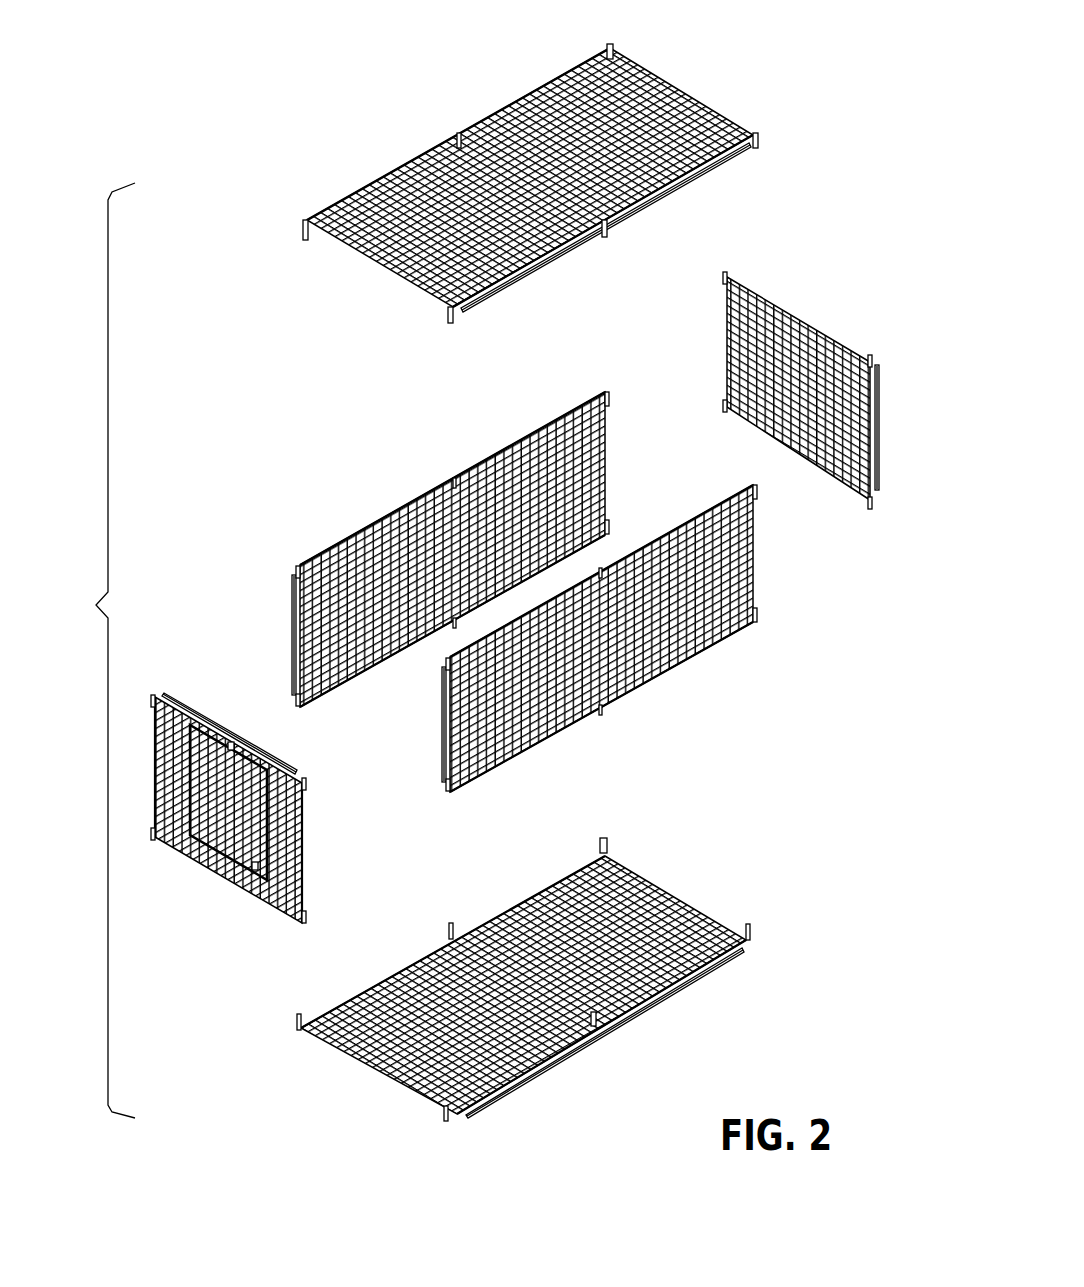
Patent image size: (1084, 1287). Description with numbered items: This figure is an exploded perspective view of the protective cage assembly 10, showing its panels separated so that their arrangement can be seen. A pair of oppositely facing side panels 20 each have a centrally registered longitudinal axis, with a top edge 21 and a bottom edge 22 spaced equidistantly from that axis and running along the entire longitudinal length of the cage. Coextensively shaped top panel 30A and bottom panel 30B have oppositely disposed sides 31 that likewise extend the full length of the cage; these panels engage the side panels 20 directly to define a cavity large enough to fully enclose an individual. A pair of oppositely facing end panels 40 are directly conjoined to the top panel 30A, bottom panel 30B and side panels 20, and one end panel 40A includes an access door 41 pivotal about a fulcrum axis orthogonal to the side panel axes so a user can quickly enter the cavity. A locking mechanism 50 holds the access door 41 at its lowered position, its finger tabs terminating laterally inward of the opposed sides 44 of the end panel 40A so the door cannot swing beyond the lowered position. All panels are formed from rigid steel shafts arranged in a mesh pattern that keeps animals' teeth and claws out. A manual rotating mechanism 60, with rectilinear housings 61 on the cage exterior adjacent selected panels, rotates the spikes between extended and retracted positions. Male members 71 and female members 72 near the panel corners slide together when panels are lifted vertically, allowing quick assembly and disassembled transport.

The assembly 10 is at (262, 122).
The side panels 20 is at (485, 460).
The top edge 21 is at (518, 440).
The bottom edge 22 is at (350, 680).
The top panel 30A is at (672, 92).
The bottom panel 30B is at (668, 897).
The sides 31 is at (532, 100).
The end panels 40 is at (782, 310).
The one end panel 40A is at (262, 902).
The access door 41 is at (232, 872).
The opposed sides of the one end panel 44 is at (153, 775).
The locking mechanism 50 is at (190, 845).
The manual rotating mechanism 60 is at (522, 285).
The rectilinear housings 61 is at (563, 258).
The male members 71 is at (724, 278).
The female members 72 is at (614, 46).